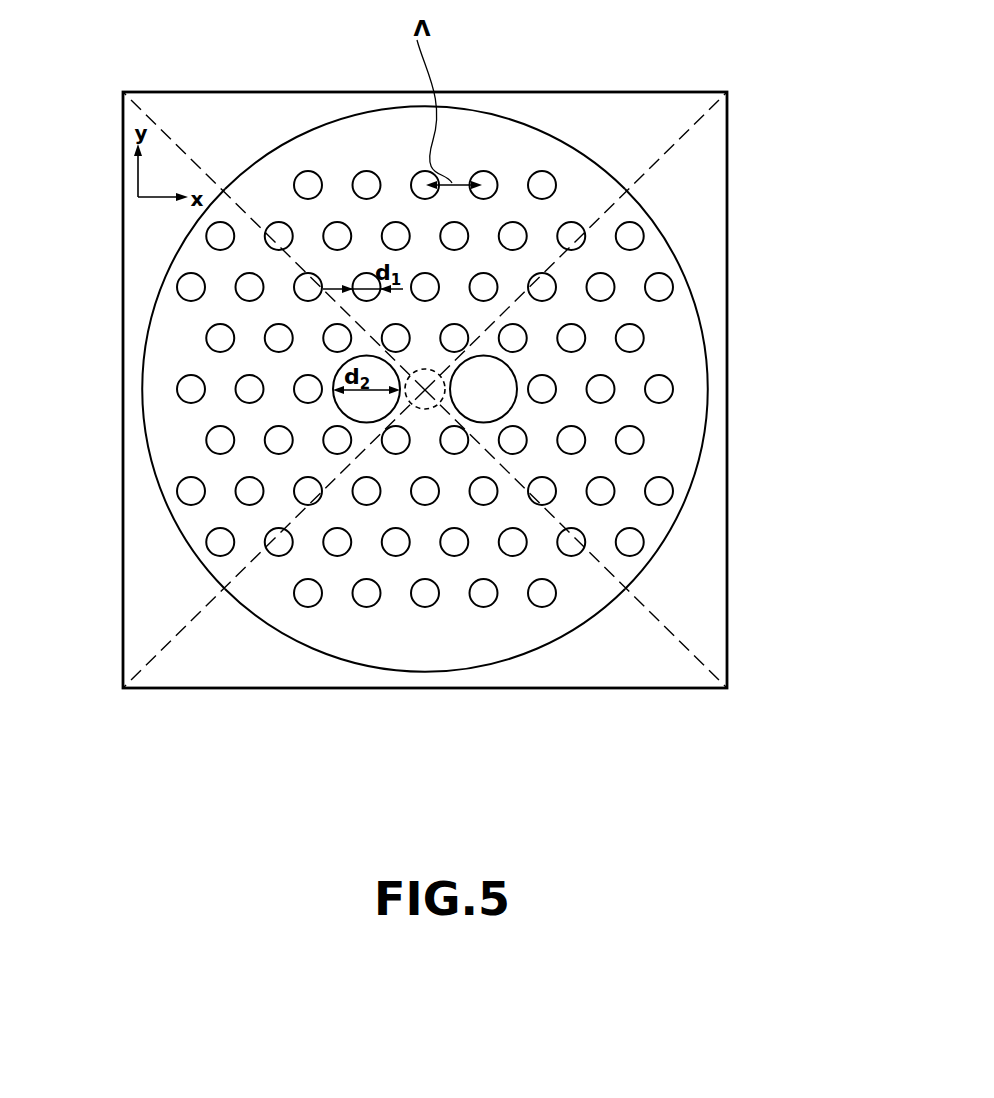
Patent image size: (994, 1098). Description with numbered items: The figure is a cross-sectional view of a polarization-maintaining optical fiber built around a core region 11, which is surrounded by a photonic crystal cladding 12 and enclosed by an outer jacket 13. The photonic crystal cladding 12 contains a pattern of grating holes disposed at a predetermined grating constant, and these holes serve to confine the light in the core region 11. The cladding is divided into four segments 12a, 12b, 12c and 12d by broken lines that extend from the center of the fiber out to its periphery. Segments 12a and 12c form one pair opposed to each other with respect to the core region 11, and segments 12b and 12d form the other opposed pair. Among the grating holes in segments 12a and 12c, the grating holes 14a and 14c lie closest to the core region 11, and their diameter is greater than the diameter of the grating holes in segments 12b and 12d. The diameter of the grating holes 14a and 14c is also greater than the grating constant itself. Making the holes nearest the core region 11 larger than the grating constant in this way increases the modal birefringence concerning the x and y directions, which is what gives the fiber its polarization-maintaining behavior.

The core region 11 is at (423, 368).
The photonic crystal cladding 12 is at (365, 252).
The segment 12a is at (660, 425).
The segment 12b is at (483, 630).
The segment 12c is at (157, 410).
The segment 12d is at (582, 183).
The jacket 13 is at (682, 200).
The grating hole 14a is at (517, 372).
The grating hole 14c is at (347, 403).